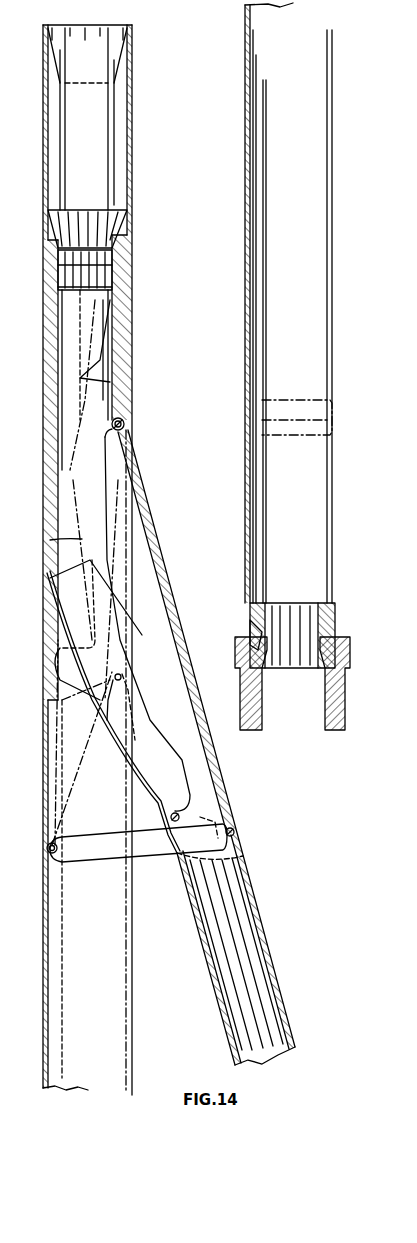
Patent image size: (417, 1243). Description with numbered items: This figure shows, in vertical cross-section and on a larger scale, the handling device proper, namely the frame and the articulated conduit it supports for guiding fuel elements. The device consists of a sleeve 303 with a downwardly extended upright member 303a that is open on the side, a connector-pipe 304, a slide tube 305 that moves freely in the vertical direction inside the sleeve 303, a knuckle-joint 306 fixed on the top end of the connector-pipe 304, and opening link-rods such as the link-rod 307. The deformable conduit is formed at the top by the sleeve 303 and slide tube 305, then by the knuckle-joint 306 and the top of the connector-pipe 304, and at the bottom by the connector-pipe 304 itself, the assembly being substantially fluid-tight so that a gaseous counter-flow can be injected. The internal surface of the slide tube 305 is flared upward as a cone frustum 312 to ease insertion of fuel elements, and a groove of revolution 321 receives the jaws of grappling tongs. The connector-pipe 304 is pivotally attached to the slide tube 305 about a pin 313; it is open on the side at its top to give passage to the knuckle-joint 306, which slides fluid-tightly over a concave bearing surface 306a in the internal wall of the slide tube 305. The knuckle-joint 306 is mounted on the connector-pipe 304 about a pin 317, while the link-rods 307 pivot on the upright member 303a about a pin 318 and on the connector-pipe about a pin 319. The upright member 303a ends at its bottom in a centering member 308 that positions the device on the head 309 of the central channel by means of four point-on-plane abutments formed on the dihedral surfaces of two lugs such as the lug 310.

The sleeve 303 is at (132, 112).
The upright member 303a is at (250, 238).
The connector-pipe 304 is at (287, 1017).
The slide tube 305 is at (118, 314).
The knuckle-joint 306 is at (112, 750).
The concave bearing surface 306a is at (57, 542).
The link-rod 307 is at (148, 845).
The centering member 308 is at (325, 612).
The head of the central channel 309 is at (305, 700).
The lug 310 is at (250, 630).
The cone frustum 312 is at (113, 208).
The pin 313 is at (125, 246).
The pin 317 is at (174, 812).
The pin 318 is at (56, 855).
The pin 319 is at (234, 831).
The groove of revolution 321 is at (112, 272).